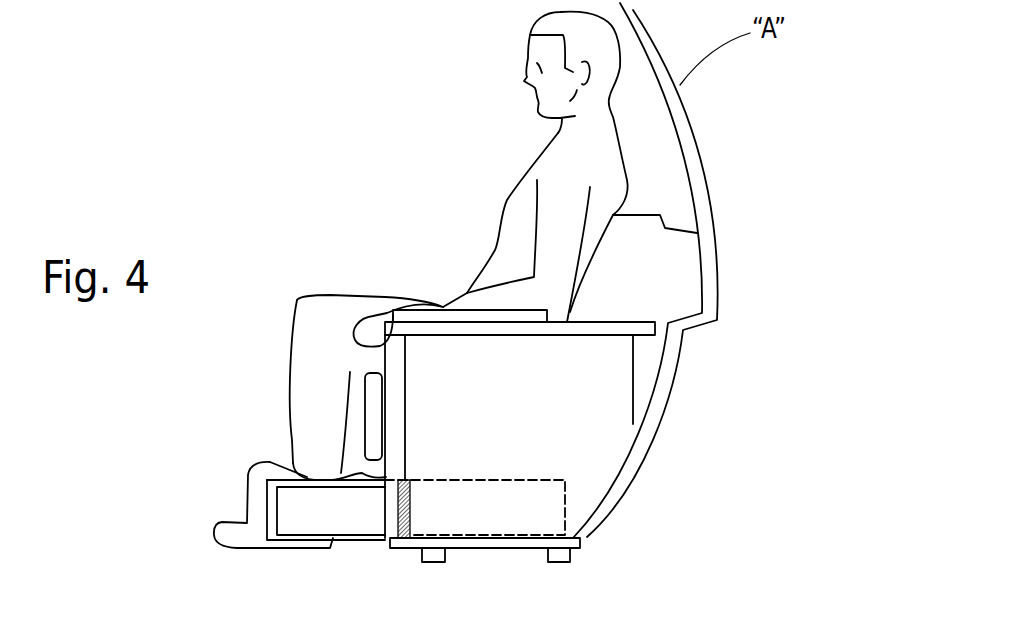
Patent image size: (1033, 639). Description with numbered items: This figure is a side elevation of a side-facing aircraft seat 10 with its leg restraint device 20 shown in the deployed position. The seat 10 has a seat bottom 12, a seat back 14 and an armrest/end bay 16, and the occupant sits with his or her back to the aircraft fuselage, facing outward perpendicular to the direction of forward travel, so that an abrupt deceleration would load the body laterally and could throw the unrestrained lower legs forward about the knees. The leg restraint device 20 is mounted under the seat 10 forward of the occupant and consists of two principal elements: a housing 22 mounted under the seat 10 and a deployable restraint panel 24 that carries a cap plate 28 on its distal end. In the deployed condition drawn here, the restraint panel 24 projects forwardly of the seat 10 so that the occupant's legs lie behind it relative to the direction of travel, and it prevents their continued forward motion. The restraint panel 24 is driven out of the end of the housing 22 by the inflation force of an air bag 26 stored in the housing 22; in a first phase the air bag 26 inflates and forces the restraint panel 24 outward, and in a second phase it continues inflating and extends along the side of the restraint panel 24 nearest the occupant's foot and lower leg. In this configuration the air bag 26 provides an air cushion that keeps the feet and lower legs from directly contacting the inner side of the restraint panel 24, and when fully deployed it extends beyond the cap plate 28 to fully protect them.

The seat 10 is at (650, 160).
The seat bottom 12 is at (373, 378).
The seat back 14 is at (673, 258).
The armrest/end bay 16 is at (595, 402).
The leg restraint device 20 is at (493, 588).
The housing 22 is at (540, 513).
The restraint panel 24 is at (352, 520).
The air bag 26 is at (300, 478).
The cap plate 28 is at (267, 510).